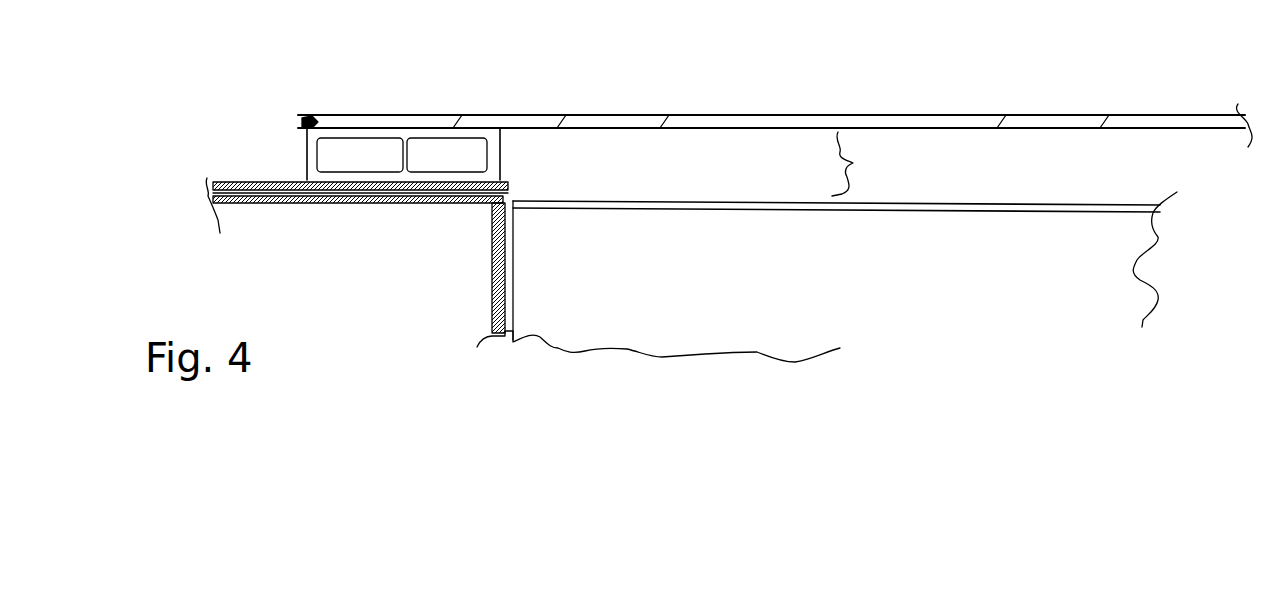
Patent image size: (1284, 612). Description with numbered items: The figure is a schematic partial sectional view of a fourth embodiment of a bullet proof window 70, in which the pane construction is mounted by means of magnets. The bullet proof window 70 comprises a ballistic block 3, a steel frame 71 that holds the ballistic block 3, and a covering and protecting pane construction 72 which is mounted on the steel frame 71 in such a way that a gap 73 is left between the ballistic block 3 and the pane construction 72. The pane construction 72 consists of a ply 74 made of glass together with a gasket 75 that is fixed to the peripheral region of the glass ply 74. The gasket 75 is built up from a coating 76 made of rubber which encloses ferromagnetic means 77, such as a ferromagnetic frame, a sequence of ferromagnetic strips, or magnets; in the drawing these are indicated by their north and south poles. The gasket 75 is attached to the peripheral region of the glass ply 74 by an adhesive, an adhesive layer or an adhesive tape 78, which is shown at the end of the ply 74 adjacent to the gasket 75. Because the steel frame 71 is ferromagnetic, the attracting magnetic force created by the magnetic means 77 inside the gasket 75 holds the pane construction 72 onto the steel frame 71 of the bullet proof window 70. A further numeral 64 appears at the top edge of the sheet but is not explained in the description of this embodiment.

The ballistic block 3 is at (562, 313).
The element 64 is at (428, 8).
The bullet proof window 70 is at (346, 223).
The steel frame 71 is at (295, 207).
The pane construction 72 is at (548, 120).
The gap 73 is at (868, 164).
The ply 74 is at (620, 118).
The gasket 75 is at (308, 162).
The coating 76 is at (348, 138).
The ferromagnetic means 77 is at (447, 138).
The adhesive tape 78 is at (312, 116).